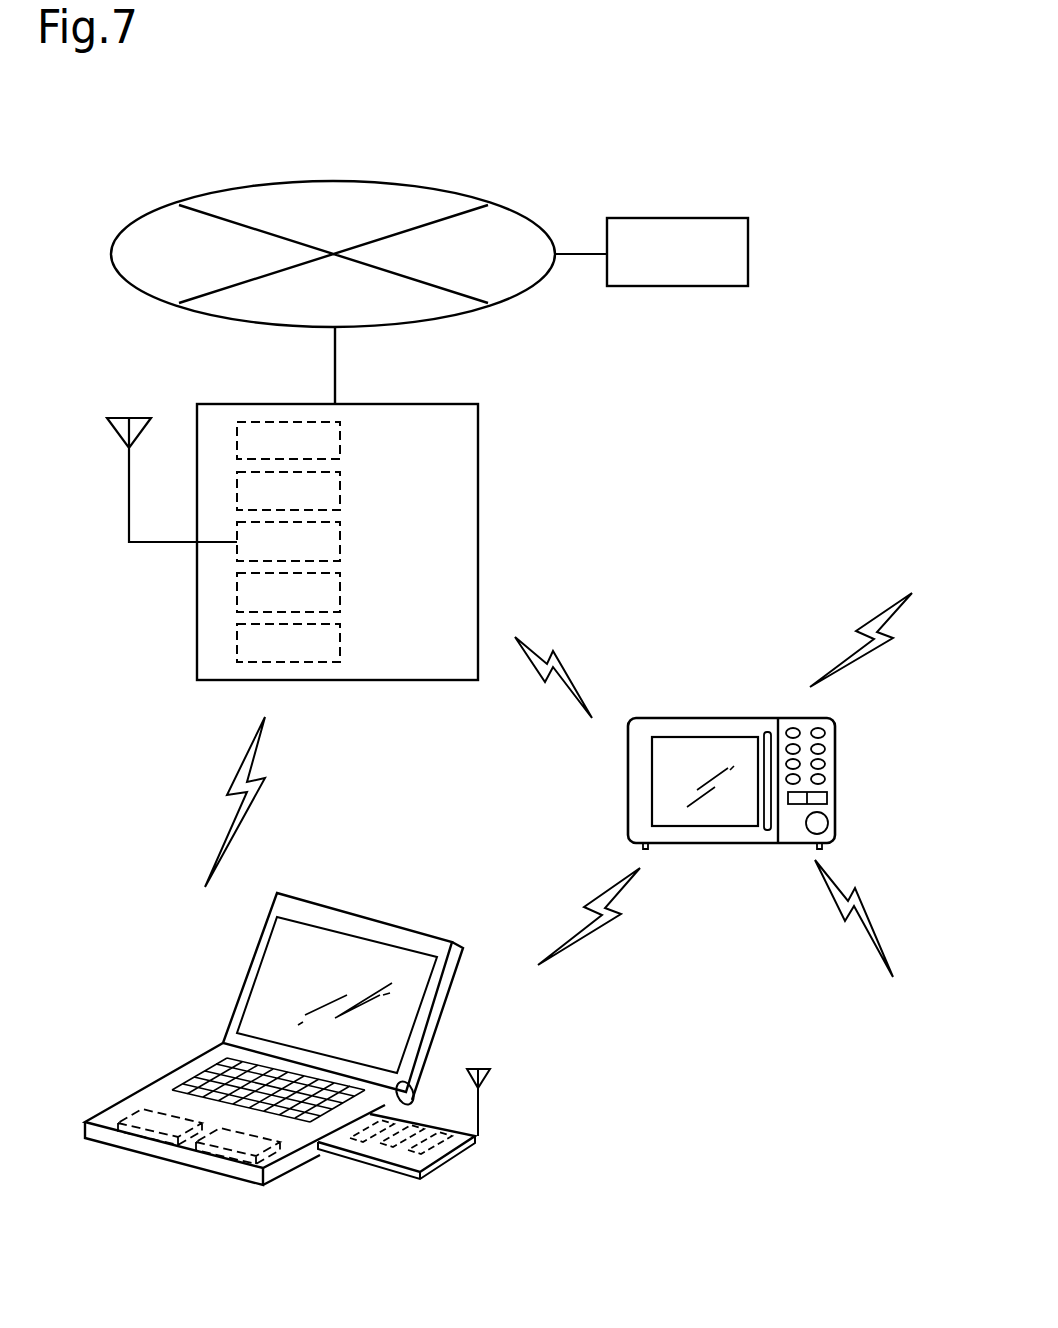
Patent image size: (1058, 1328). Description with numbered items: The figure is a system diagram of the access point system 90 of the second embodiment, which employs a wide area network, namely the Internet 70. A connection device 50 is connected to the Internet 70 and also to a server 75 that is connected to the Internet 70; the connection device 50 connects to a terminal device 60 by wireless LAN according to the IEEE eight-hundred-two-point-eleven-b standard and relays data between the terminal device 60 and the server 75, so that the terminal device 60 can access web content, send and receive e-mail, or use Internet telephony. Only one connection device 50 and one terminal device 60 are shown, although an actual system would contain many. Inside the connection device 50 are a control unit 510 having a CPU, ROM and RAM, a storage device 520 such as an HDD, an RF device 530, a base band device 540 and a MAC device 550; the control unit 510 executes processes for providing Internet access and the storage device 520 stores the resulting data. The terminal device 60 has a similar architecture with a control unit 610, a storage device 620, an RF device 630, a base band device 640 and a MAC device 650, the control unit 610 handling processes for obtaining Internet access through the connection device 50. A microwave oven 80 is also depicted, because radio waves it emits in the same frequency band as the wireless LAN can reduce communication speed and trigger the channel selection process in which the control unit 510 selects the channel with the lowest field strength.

The connection device 50 is at (478, 455).
The control unit 510 is at (340, 446).
The storage device 520 is at (340, 497).
The RF device 530 is at (340, 547).
The base band device 540 is at (340, 599).
The MAC device 550 is at (340, 649).
The terminal device 60 is at (420, 930).
The control unit 610 is at (118, 1122).
The storage device 620 is at (206, 1150).
The RF device 630 is at (407, 1172).
The base band device 640 is at (375, 1150).
The MAC device 650 is at (347, 1142).
The Internet 70 is at (469, 183).
The server 75 is at (748, 258).
The microwave oven 80 is at (752, 718).
The access point system 90 is at (168, 718).